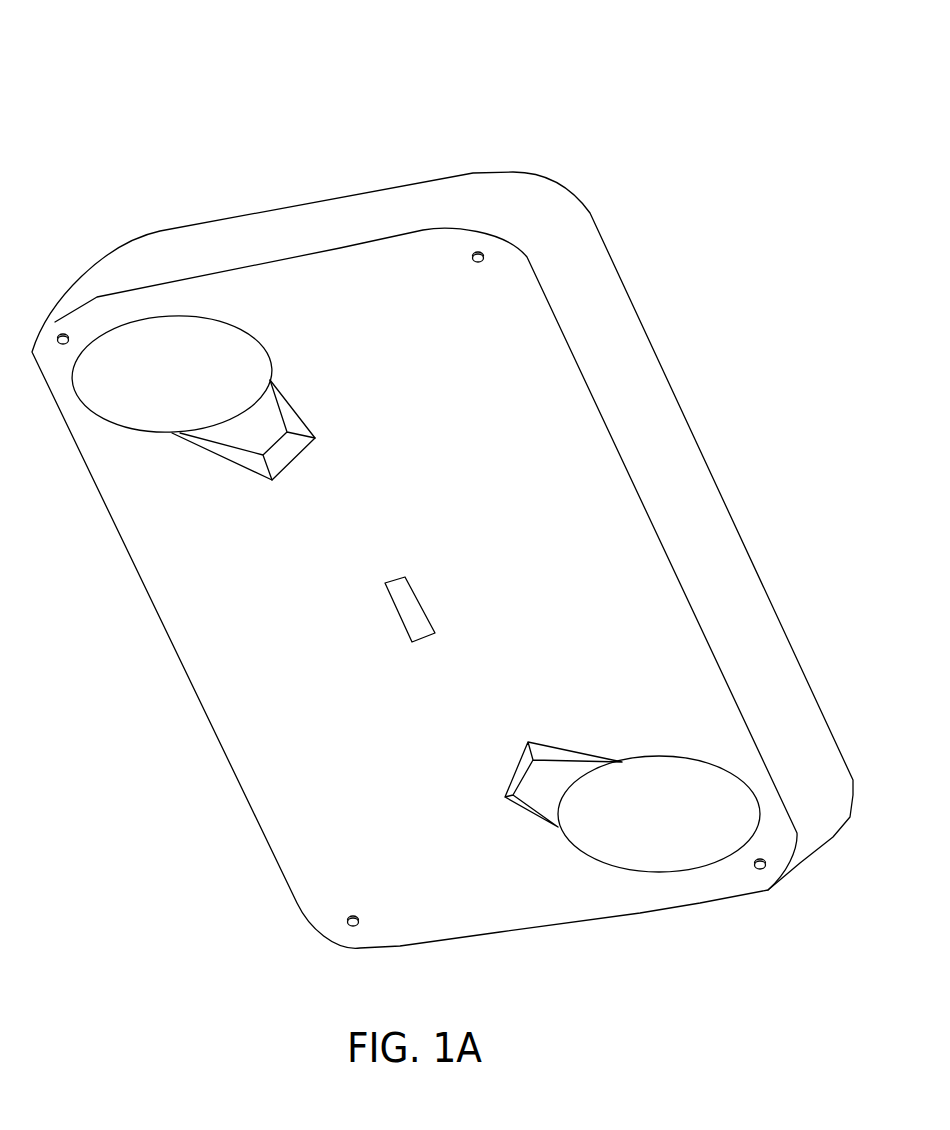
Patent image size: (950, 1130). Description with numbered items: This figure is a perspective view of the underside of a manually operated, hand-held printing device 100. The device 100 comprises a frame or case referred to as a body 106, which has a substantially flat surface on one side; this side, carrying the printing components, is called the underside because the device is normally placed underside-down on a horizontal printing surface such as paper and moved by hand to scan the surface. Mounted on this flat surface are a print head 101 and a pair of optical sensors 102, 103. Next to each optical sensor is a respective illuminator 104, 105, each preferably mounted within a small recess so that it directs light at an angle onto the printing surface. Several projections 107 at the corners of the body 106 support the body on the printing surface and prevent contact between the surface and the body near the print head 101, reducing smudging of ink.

The printing device 100 is at (168, 92).
The print head 101 is at (410, 592).
The optical sensor 102 is at (193, 384).
The optical sensor 103 is at (678, 830).
The illuminator 104 is at (283, 456).
The illuminator 105 is at (518, 778).
The body 106 is at (764, 889).
The projections 107 is at (62, 336).